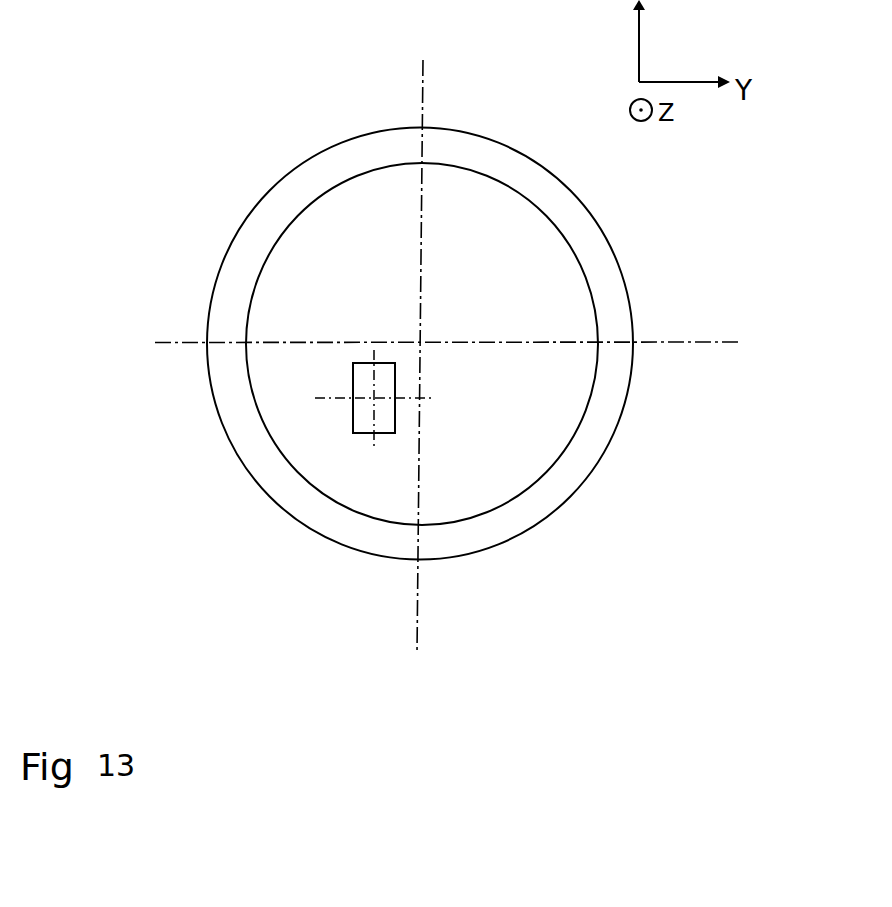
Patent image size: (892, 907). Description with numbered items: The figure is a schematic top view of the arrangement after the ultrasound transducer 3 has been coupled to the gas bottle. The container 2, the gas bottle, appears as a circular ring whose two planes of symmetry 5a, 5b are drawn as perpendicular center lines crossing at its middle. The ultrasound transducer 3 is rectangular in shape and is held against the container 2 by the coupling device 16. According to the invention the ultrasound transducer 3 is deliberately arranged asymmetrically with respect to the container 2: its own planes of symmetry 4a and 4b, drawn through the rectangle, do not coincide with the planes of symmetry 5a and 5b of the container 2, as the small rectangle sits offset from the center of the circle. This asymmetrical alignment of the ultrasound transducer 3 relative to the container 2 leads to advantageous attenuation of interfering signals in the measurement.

The container 2 is at (596, 294).
The coupling device 16 is at (604, 226).
The ultrasound transducer 3 is at (353, 420).
The plane of symmetry of the ultrasound transducer 4a is at (372, 413).
The plane of symmetry of the ultrasound transducer 4b is at (360, 399).
The plane of symmetry of the container 5a is at (421, 378).
The plane of symmetry of the container 5b is at (419, 348).